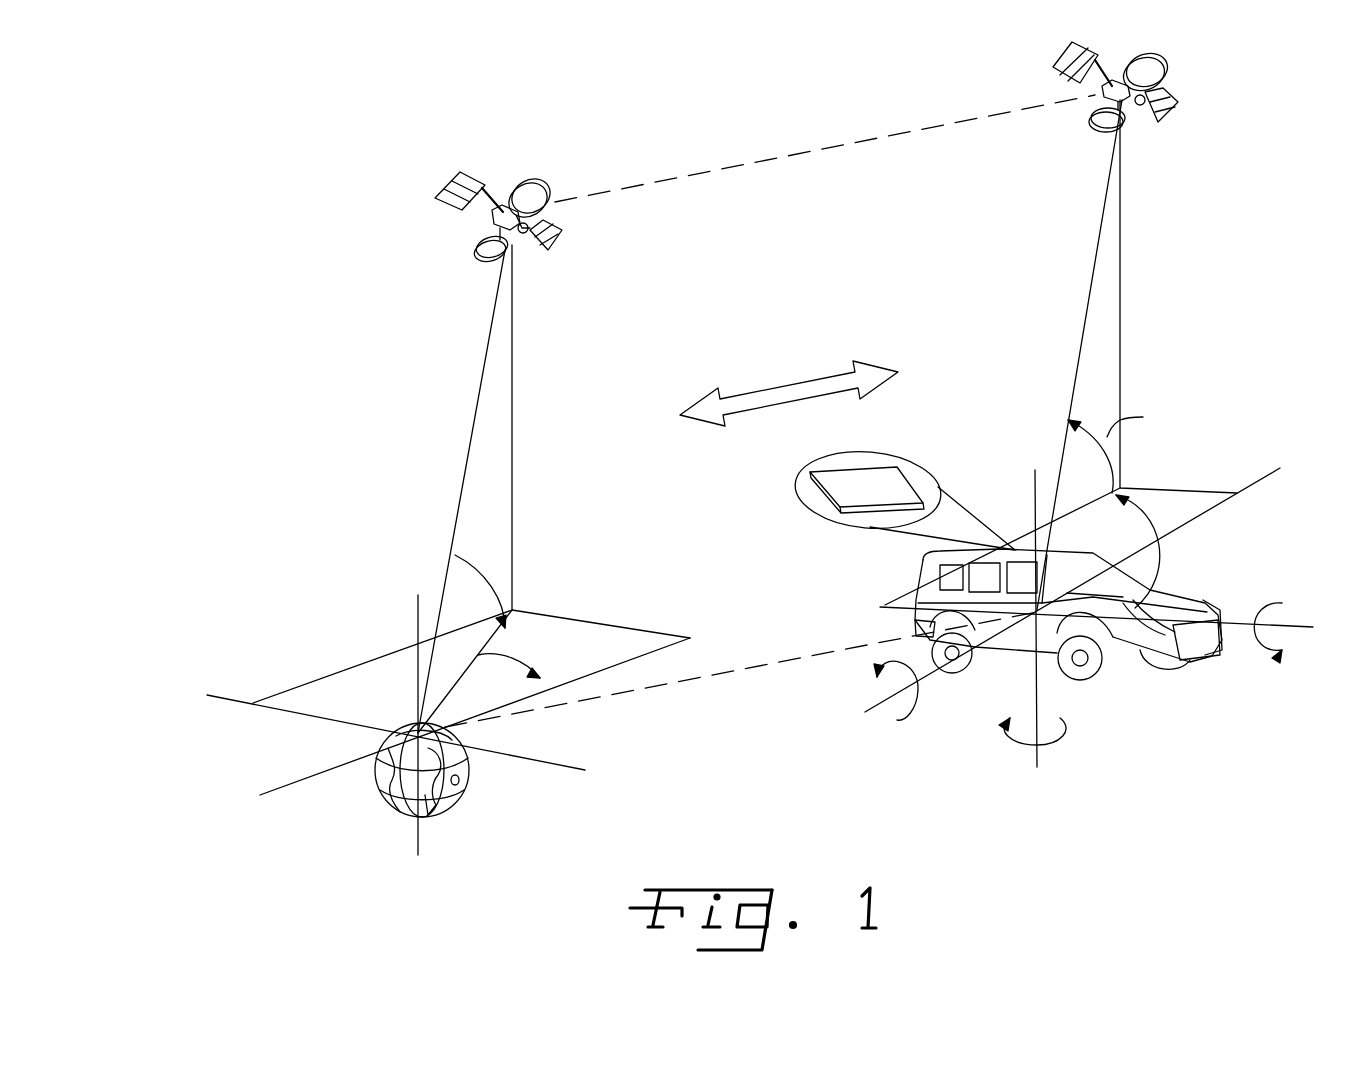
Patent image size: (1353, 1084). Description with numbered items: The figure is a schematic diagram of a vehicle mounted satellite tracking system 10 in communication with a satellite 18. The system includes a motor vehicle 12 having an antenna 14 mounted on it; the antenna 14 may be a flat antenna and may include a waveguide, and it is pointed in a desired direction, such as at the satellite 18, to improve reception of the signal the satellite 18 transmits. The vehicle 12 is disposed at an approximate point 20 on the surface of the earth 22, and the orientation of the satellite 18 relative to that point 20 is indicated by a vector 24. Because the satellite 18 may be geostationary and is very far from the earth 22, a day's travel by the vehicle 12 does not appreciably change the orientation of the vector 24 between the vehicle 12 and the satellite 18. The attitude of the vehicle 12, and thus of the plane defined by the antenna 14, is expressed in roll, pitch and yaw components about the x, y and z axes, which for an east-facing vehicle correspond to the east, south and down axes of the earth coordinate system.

The vehicle mounted satellite tracking system 10 is at (1202, 762).
The motor vehicle 12 is at (1183, 670).
The antenna 14 is at (845, 487).
The satellite 18 is at (457, 168).
The approximate point 20 is at (413, 718).
The earth 22 is at (463, 797).
The vector 24 is at (460, 472).